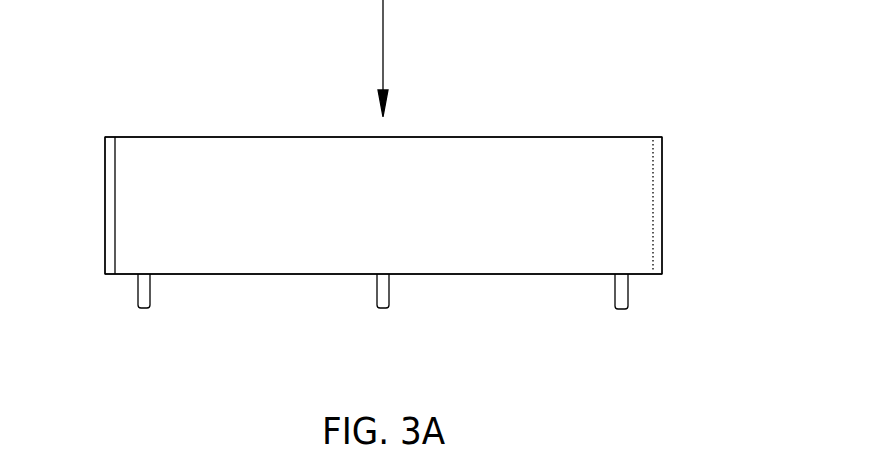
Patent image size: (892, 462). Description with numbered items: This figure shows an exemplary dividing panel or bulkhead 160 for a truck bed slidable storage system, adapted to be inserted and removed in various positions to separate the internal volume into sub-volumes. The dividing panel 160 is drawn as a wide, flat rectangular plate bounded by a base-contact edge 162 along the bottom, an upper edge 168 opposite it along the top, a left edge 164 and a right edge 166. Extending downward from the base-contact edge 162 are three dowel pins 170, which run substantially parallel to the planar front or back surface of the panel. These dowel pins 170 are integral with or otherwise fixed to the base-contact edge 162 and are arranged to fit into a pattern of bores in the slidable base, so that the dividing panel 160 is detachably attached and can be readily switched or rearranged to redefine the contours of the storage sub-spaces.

The dividing panel 160 is at (698, 89).
The base-contact edge 162 is at (512, 274).
The left edge 164 is at (104, 220).
The right edge 166 is at (662, 200).
The upper edge 168 is at (180, 136).
The dowel pins 170 is at (145, 310).